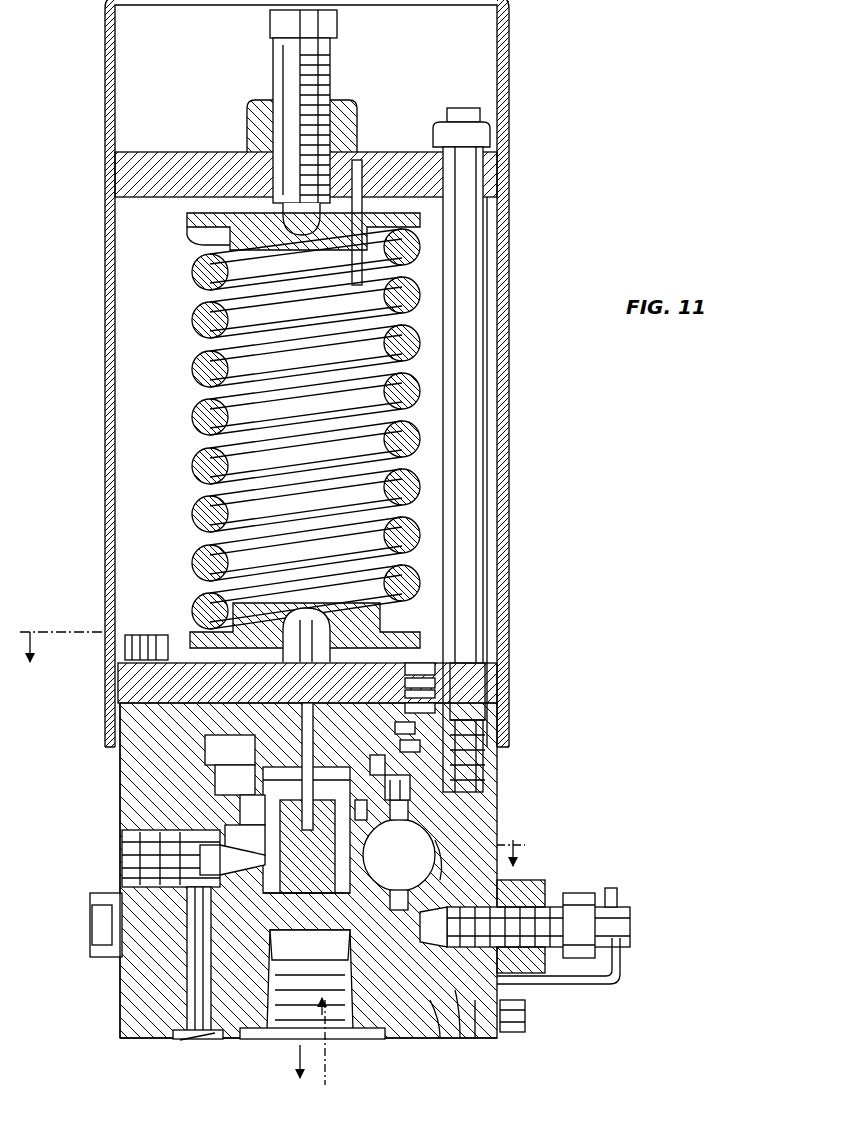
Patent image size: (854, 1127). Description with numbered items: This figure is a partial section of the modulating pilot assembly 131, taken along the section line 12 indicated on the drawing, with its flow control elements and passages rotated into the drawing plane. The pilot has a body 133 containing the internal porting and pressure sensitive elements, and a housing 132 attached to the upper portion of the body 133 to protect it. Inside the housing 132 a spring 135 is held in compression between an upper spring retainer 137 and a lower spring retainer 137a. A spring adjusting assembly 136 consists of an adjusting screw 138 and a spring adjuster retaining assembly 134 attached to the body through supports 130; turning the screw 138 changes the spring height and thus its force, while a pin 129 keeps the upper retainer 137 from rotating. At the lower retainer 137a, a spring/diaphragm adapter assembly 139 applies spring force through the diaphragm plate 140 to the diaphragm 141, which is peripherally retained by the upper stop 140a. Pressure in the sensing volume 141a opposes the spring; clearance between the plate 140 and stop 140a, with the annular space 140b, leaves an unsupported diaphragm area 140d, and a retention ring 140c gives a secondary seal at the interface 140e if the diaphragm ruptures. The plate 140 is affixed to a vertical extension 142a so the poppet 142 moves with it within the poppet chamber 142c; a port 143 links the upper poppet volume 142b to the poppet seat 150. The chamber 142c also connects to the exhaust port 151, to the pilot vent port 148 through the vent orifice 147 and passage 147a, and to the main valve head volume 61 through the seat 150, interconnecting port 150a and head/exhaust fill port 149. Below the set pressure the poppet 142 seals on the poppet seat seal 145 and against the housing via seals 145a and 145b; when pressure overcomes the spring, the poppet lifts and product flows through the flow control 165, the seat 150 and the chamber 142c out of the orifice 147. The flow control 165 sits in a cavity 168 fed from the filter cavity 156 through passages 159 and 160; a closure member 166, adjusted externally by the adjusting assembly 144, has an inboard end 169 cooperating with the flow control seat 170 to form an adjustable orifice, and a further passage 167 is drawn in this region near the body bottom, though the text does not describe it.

The housing 132 is at (507, 50).
The pilot assembly 131 is at (524, 125).
The supports 130 is at (483, 239).
The pin 129 is at (380, 160).
The spring adjuster retaining assembly 134 is at (210, 148).
The spring adjusting assembly 136 is at (245, 100).
The adjusting screw 138 is at (335, 68).
The upper spring retainer 137 is at (190, 223).
The lower spring retainer 137a is at (235, 613).
The spring 135 is at (192, 373).
The spring/diaphragm adapter assembly 139 is at (190, 641).
The diaphragm sensing volume 141a is at (180, 700).
The diaphragm plate 140 is at (280, 704).
The upper stop 140a is at (440, 666).
The annular space 140b is at (420, 691).
The diaphragm retention ring 140c is at (425, 716).
The unsupported diaphragm area 140d is at (440, 731).
The secondary seal interface 140e is at (425, 704).
The diaphragm 141 is at (420, 736).
The poppet 142 is at (470, 841).
The vertical extension 142a is at (205, 746).
The upper poppet volume 142b is at (230, 791).
The poppet chamber 142c is at (255, 836).
The port 143 is at (270, 801).
The poppet seat seal 145 is at (215, 1041).
The seal 145a is at (440, 819).
The seal 145b is at (470, 801).
The vent orifice 147 is at (125, 869).
The passage 147a is at (200, 861).
The pilot vent port 148 is at (110, 893).
The head/exhaust fill port 149 is at (335, 1041).
The poppet seat 150 is at (340, 991).
The interconnecting port 150a is at (272, 1034).
The exhaust port 151 is at (272, 981).
The filter cavity 156 is at (423, 879).
The passage 159 is at (400, 791).
The passage 160 is at (500, 891).
The flow control 165 is at (530, 1041).
The closure member 166 is at (580, 893).
The passage 167 is at (440, 1039).
The flow control cavity 168 is at (530, 901).
The inboard end 169 is at (480, 1039).
The flow control seat 170 is at (460, 1039).
The adjusting assembly 144 is at (615, 891).
The body 133 is at (120, 986).
The main valve head volume 61 is at (305, 1052).
The section line 12- 12 is at (288, 738).